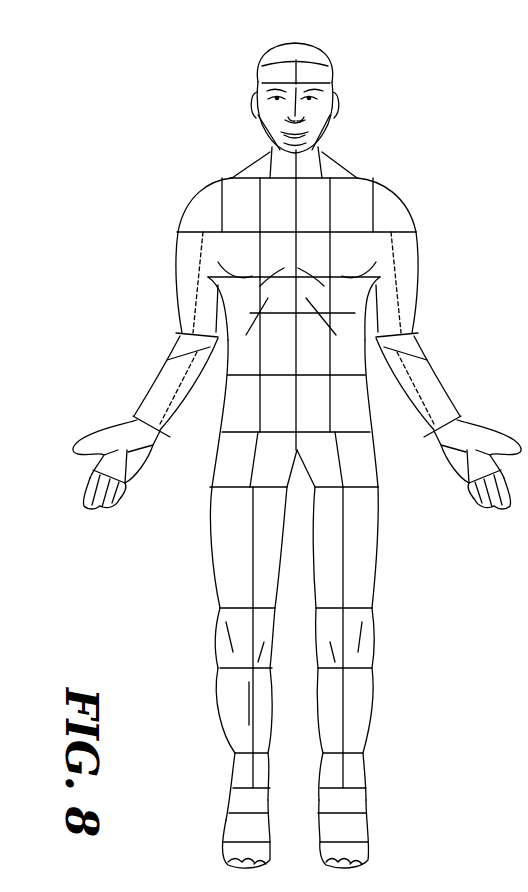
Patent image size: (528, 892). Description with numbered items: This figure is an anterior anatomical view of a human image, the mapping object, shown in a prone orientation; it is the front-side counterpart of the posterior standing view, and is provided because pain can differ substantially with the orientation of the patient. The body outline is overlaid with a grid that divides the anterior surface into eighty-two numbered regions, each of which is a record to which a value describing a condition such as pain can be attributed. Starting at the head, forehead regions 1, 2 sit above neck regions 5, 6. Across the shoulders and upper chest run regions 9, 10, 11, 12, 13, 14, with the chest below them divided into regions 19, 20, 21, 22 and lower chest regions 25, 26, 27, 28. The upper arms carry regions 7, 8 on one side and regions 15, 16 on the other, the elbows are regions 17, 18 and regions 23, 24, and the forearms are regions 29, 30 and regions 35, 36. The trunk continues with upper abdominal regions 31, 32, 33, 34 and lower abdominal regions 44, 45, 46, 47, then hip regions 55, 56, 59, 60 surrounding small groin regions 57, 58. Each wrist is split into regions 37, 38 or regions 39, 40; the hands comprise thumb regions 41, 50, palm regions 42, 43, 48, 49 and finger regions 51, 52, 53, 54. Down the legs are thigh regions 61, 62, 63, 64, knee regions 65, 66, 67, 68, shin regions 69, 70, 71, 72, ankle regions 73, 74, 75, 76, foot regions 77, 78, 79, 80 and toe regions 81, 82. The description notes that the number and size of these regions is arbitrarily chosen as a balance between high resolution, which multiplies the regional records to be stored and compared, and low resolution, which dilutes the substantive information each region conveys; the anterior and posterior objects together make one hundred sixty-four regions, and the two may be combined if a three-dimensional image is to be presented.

The region 1 is at (279, 77).
The region 2 is at (313, 77).
The region 5 is at (254, 165).
The region 6 is at (335, 165).
The region 7 is at (183, 282).
The region 8 is at (205, 282).
The region 9 is at (205, 205).
The region 10 is at (238, 205).
The region 11 is at (273, 205).
The region 12 is at (289, 237).
The region 13 is at (345, 205).
The region 14 is at (386, 205).
The region 15 is at (386, 282).
The region 16 is at (405, 282).
The region 17 is at (193, 344).
The region 18 is at (193, 351).
The region 19 is at (234, 257).
The region 20 is at (278, 257).
The region 21 is at (313, 257).
The region 22 is at (355, 254).
The region 23 is at (404, 351).
The region 24 is at (398, 336).
The region 25 is at (228, 308).
The region 26 is at (273, 326).
The region 27 is at (325, 296).
The region 28 is at (355, 326).
The region 29 is at (157, 376).
The region 30 is at (189, 384).
The region 31 is at (236, 410).
The region 32 is at (278, 354).
The region 33 is at (313, 354).
The region 34 is at (354, 410).
The region 35 is at (405, 384).
The region 36 is at (437, 376).
The region 37 is at (146, 424).
The region 38 is at (148, 439).
The region 39 is at (442, 430).
The region 40 is at (452, 430).
The region 41 is at (105, 437).
The region 42 is at (108, 466).
The region 43 is at (139, 464).
The region 44 is at (241, 403).
The region 45 is at (278, 411).
The region 46 is at (313, 411).
The region 47 is at (350, 403).
The region 48 is at (455, 464).
The region 49 is at (485, 466).
The region 50 is at (489, 437).
The region 51 is at (81, 493).
The region 52 is at (112, 498).
The region 53 is at (477, 497).
The region 54 is at (511, 492).
The region 55 is at (234, 459).
The region 56 is at (268, 465).
The region 57 is at (286, 468).
The region 58 is at (306, 468).
The region 59 is at (323, 459).
The region 60 is at (360, 465).
The region 61 is at (226, 547).
The region 62 is at (270, 547).
The region 63 is at (328, 547).
The region 64 is at (363, 547).
The region 65 is at (234, 638).
The region 66 is at (264, 638).
The region 67 is at (329, 638).
The region 68 is at (358, 638).
The region 69 is at (234, 710).
The region 70 is at (261, 710).
The region 71 is at (330, 710).
The region 72 is at (358, 710).
The region 73 is at (239, 786).
The region 74 is at (262, 776).
The region 75 is at (331, 776).
The region 76 is at (354, 776).
The region 77 is at (251, 800).
The region 78 is at (343, 800).
The region 79 is at (249, 821).
The region 80 is at (342, 821).
The region 81 is at (247, 844).
The region 82 is at (344, 834).